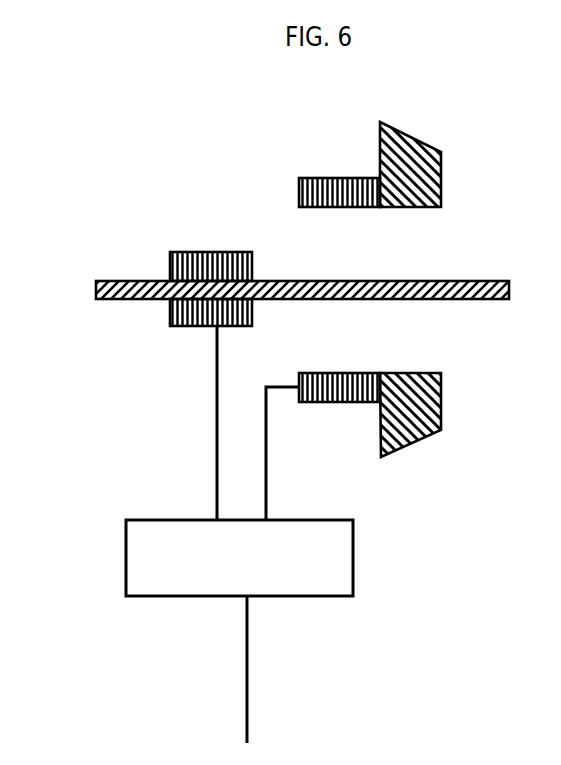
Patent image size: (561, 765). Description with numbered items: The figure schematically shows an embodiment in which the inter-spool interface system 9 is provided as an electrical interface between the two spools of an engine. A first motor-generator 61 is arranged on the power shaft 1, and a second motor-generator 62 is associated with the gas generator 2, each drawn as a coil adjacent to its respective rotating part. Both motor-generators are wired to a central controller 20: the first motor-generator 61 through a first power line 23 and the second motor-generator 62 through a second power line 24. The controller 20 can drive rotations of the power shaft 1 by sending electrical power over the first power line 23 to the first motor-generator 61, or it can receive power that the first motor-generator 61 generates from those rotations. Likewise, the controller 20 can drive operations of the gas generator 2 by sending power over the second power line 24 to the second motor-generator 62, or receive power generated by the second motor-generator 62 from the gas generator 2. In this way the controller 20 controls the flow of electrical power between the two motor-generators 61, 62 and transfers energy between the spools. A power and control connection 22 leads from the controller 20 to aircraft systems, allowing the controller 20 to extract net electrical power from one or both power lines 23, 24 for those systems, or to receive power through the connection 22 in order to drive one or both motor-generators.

The power shaft 1 is at (155, 280).
The gas generator 2 is at (413, 168).
The inter-spool interface system 9 is at (126, 404).
The controller 20 is at (353, 583).
The power and control connection 22 is at (247, 707).
The first power line 23 is at (217, 445).
The second power line 24 is at (268, 446).
The first motor-generator 61 is at (170, 325).
The second motor-generator 62 is at (360, 402).